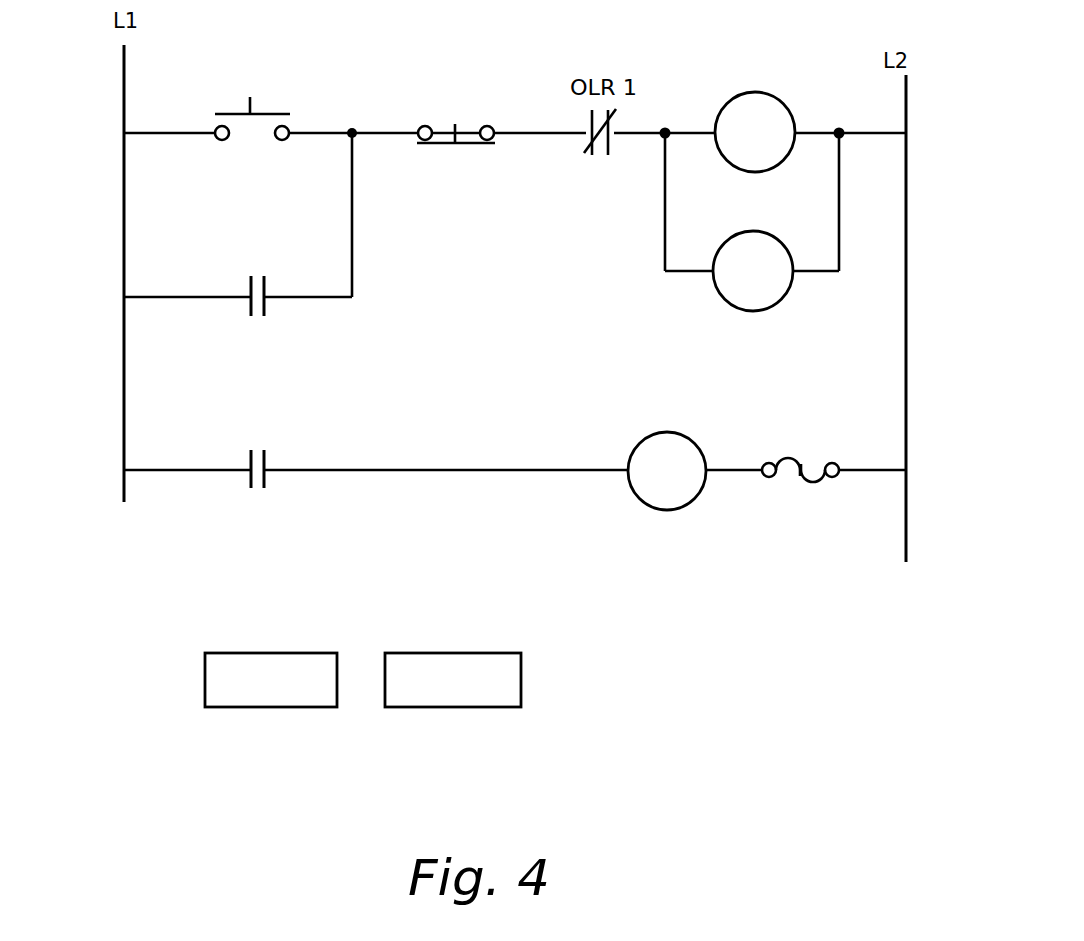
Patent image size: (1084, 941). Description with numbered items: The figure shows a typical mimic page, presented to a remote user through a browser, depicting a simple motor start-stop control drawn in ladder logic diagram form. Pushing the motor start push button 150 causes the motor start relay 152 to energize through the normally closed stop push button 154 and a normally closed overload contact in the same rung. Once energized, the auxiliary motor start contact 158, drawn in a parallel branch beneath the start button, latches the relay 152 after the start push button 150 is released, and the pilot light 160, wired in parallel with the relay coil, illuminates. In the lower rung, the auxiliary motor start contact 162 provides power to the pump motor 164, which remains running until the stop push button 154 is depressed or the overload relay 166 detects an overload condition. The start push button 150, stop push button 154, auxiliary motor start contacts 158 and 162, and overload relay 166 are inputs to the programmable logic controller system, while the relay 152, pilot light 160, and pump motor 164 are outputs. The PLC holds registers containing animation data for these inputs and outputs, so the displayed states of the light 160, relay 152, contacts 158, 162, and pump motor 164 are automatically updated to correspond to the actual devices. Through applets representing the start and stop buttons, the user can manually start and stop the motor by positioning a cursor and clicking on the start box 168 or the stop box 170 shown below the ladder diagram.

The motor start push button 150 is at (296, 120).
The motor start relay 152 is at (755, 92).
The stop push button 154 is at (462, 144).
The auxiliary motor start contact 158 is at (272, 307).
The pilot light 160 is at (713, 285).
The auxiliary motor start contact 162 is at (272, 480).
The pump motor 164 is at (647, 505).
The overload relay 166 is at (785, 482).
The start box 168 is at (238, 707).
The stop box 170 is at (420, 707).